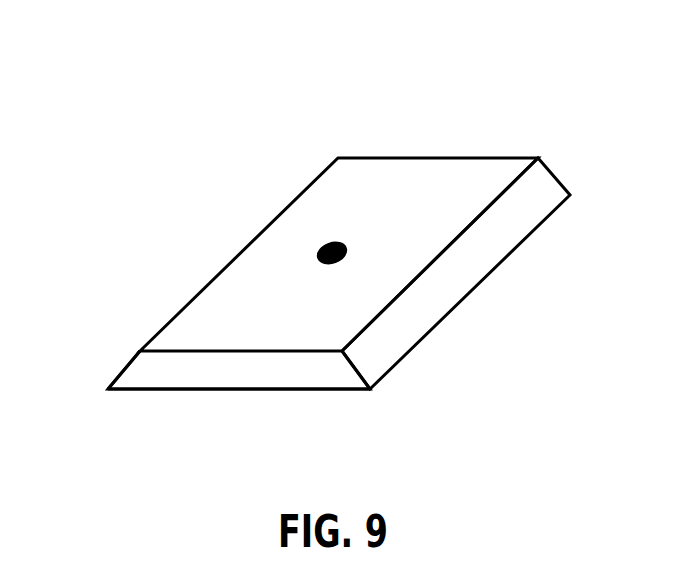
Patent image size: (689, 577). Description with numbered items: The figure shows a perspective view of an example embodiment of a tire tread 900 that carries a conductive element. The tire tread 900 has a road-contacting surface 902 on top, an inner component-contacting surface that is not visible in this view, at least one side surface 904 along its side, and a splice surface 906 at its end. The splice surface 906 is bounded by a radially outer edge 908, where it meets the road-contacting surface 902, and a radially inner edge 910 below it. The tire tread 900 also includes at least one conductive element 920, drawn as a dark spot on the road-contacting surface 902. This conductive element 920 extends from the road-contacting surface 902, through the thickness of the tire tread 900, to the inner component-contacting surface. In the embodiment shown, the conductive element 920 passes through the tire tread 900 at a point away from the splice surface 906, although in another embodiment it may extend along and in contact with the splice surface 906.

The tire tread 900 is at (189, 138).
The road-contacting surface 902 is at (417, 177).
The side surface 904 is at (500, 233).
The splice surface 906 is at (345, 372).
The radially outer edge 908 is at (148, 345).
The radially inner edge 910 is at (120, 393).
The conductive element 920 is at (348, 249).